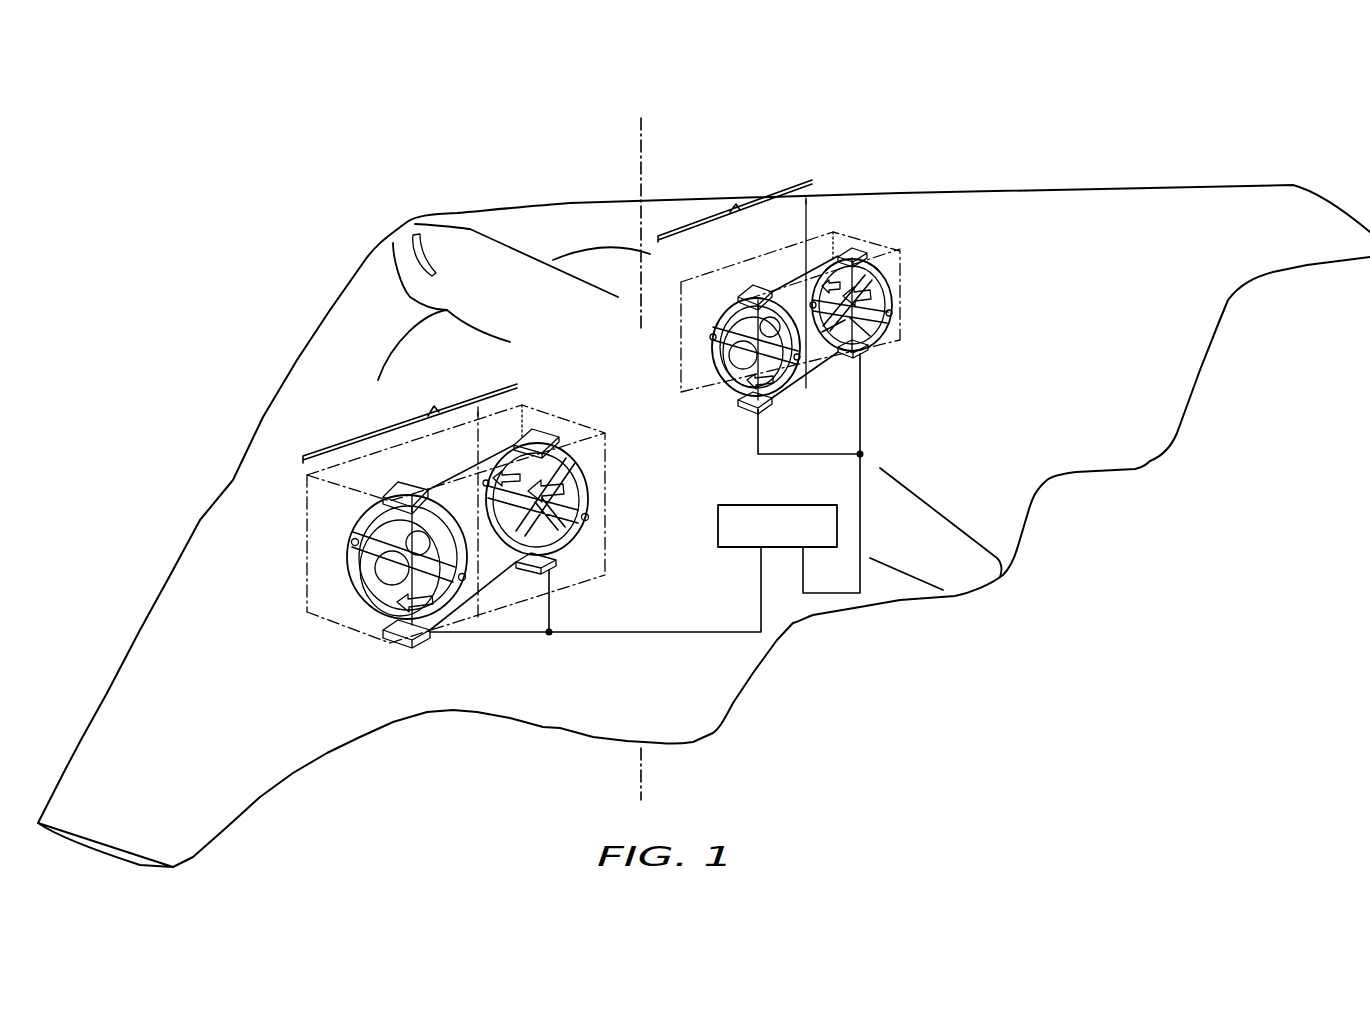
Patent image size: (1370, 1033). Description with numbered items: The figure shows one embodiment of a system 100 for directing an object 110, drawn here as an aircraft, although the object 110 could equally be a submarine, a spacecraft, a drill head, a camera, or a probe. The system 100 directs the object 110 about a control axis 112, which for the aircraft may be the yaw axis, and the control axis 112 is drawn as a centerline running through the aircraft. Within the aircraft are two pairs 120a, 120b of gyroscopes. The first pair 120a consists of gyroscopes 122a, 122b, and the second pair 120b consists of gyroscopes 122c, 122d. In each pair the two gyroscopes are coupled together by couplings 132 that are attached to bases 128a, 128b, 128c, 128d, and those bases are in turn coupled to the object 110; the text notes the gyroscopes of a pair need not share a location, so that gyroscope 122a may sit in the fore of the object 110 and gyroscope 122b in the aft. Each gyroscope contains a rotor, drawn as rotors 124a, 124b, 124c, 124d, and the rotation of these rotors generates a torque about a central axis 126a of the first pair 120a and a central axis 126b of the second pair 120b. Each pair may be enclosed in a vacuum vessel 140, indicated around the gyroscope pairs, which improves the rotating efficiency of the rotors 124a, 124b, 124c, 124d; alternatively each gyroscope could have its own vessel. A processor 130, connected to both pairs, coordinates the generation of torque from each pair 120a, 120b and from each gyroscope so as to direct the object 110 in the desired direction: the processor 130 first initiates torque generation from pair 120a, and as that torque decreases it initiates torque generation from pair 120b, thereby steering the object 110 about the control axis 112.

The system for directing an object 100 is at (965, 137).
The object 110 is at (1309, 198).
The control axis 112 is at (637, 140).
The pair of gyroscopes 120a is at (410, 419).
The pair of gyroscopes 120b is at (735, 204).
The gyroscope 122a is at (296, 552).
The gyroscope 122b is at (640, 487).
The gyroscope 122c is at (664, 342).
The gyroscope 122d is at (925, 265).
The rotor 124a is at (372, 600).
The rotor 124b is at (580, 505).
The rotor 124c is at (735, 382).
The rotor 124d is at (892, 305).
The central axis 126a is at (480, 428).
The central axis 126b is at (808, 212).
The base 128a is at (398, 477).
The base 128b is at (547, 438).
The base 128c is at (742, 289).
The base 128d is at (864, 249).
The processor 130 is at (718, 524).
The coupling 132 is at (438, 484).
The vacuum vessel 140 is at (423, 645).